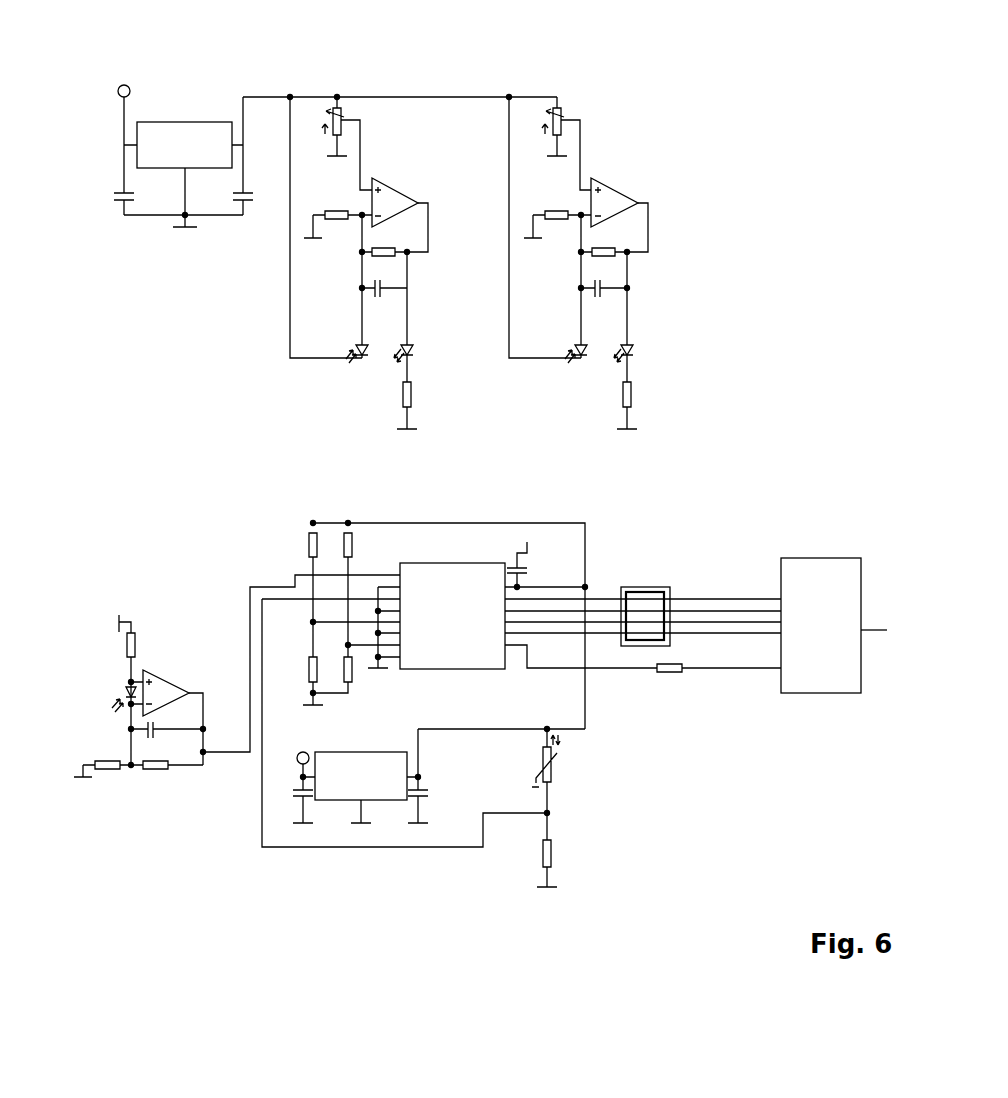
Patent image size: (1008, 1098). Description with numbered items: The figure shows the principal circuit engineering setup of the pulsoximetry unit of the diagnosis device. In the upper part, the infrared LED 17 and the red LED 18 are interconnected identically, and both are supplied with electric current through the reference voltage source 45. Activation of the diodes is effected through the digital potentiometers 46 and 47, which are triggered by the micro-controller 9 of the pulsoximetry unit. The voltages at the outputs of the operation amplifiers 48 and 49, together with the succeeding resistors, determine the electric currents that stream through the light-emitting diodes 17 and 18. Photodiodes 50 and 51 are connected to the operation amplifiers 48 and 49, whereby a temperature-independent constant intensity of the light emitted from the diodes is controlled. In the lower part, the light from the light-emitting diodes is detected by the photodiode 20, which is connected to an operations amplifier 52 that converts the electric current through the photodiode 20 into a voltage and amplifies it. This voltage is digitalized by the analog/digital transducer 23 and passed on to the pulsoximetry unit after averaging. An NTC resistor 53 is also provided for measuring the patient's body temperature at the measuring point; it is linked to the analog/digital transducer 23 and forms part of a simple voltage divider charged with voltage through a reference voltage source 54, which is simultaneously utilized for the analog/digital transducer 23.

The reference voltage source 45 is at (170, 158).
The digital potentiometer 46 is at (345, 111).
The digital potentiometer 47 is at (565, 111).
The operation amplifier 48 is at (393, 203).
The operation amplifier 49 is at (615, 203).
The photodiode 50 is at (360, 350).
The photodiode 51 is at (580, 350).
The red LED 18 is at (414, 352).
The infrared LED 17 is at (634, 352).
The photodiode 20 is at (128, 688).
The operations amplifier 52 is at (165, 692).
The analog/digital transducer 23 is at (436, 630).
The micro-controller 9 is at (812, 642).
The reference voltage source 54 is at (345, 790).
The NTC resistor 53 is at (552, 775).